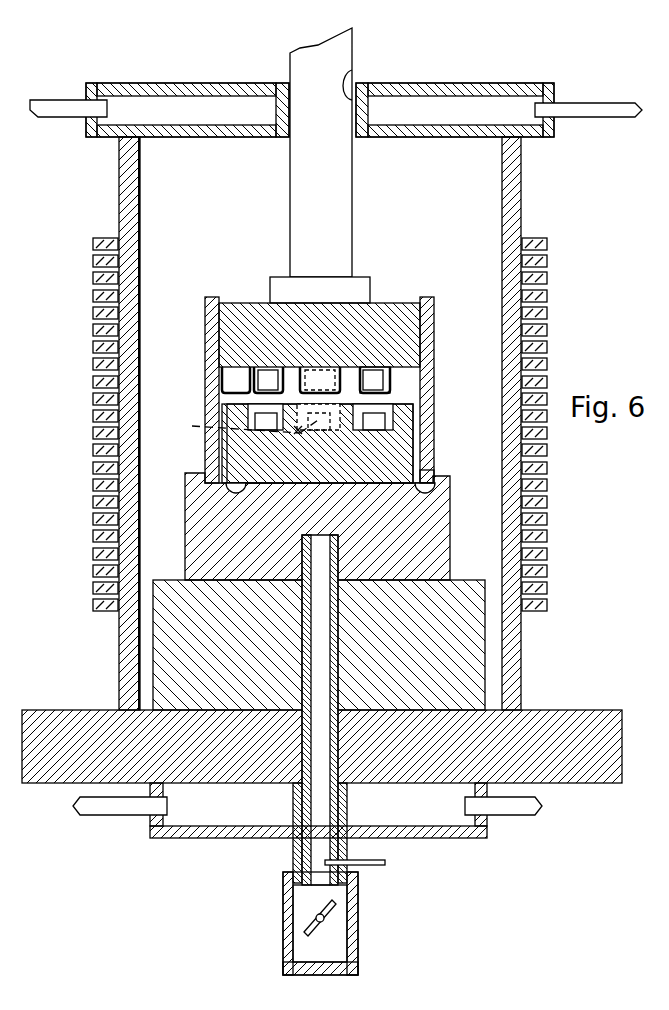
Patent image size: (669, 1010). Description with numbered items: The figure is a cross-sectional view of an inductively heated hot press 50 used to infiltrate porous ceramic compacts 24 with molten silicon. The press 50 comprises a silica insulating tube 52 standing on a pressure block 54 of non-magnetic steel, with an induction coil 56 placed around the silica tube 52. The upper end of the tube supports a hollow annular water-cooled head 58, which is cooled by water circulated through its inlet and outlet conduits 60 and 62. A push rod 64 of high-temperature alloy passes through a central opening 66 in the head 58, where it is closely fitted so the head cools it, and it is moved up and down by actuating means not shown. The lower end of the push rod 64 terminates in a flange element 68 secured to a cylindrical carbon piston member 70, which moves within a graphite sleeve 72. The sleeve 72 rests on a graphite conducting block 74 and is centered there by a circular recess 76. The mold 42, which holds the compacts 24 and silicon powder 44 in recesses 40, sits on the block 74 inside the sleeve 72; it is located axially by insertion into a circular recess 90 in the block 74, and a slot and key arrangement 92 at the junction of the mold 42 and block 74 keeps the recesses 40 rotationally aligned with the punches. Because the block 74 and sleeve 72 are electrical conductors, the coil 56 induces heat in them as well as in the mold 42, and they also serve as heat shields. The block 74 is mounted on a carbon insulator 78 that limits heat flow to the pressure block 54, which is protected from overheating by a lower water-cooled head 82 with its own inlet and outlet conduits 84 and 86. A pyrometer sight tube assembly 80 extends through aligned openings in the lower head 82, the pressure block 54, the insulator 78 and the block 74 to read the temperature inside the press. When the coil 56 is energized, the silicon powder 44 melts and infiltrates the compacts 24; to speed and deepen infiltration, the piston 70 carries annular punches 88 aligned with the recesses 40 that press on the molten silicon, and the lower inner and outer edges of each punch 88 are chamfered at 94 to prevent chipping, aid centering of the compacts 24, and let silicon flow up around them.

The compacts 24 is at (375, 420).
The recesses 40 is at (253, 408).
The mold 42 is at (403, 452).
The silicon powder 44 is at (388, 422).
The induction hot press 50 is at (119, 650).
The silica insulating tube 52 is at (513, 200).
The pressure block 54 is at (590, 722).
The induction coil 56 is at (548, 328).
The water-cooled head 58 is at (148, 83).
The inlet conduit 60 is at (63, 99).
The outlet conduit 62 is at (602, 102).
The push rod 64 is at (352, 50).
The central opening 66 is at (352, 72).
The flange element 68 is at (362, 282).
The piston member 70 is at (389, 310).
The graphite sleeve 72 is at (430, 323).
The graphite conducting block 74 is at (442, 537).
The circular recess 76 is at (430, 485).
The carbon insulator 78 is at (470, 670).
The pyrometer sight tube assembly 80 is at (293, 857).
The lower water-cooled head 82 is at (212, 838).
The inlet conduit 84 is at (102, 815).
The outlet conduit 86 is at (517, 808).
The annular punches 88 is at (383, 384).
The circular recess 90 is at (237, 492).
The slot and key arrangement 92 is at (437, 491).
The chamfers 94 is at (222, 398).